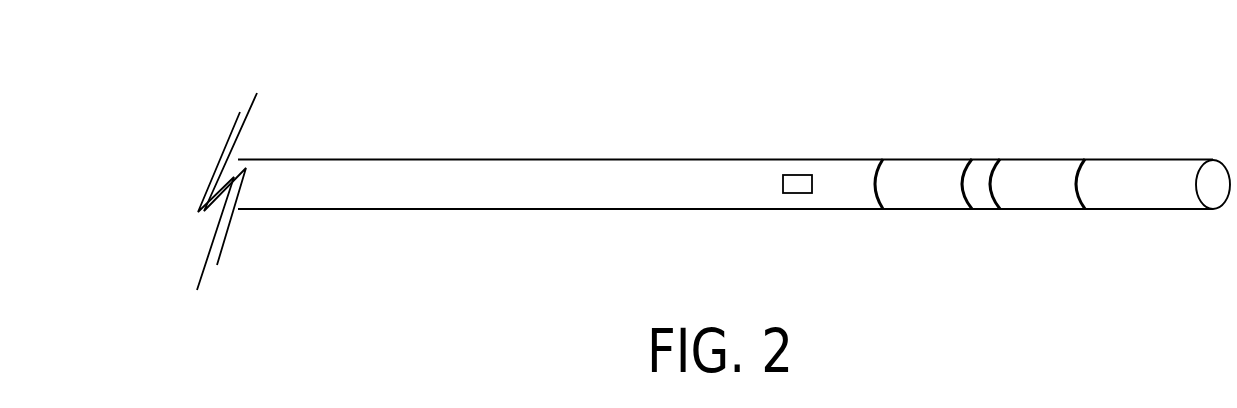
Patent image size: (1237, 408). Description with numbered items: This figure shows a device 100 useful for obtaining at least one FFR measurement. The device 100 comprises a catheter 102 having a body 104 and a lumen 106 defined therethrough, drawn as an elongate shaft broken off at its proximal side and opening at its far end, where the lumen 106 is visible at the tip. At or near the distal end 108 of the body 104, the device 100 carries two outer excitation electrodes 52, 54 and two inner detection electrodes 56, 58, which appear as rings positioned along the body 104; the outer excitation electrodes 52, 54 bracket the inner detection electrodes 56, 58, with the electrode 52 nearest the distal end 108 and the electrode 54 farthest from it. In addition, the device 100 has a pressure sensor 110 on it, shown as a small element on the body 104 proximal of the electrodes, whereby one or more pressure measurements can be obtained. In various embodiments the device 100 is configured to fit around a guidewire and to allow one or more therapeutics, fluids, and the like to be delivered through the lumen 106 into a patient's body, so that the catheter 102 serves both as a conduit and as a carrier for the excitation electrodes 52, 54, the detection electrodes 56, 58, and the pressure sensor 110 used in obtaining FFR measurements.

The device 100 is at (515, 138).
The catheter 102 is at (287, 178).
The body 104 is at (473, 195).
The lumen 106 is at (1215, 185).
The distal end 108 is at (1107, 227).
The pressure sensor 110 is at (798, 185).
The outer excitation electrode 52 is at (1085, 160).
The outer excitation electrode 54 is at (884, 158).
The inner detection electrode 56 is at (1000, 158).
The inner detection electrode 58 is at (973, 158).